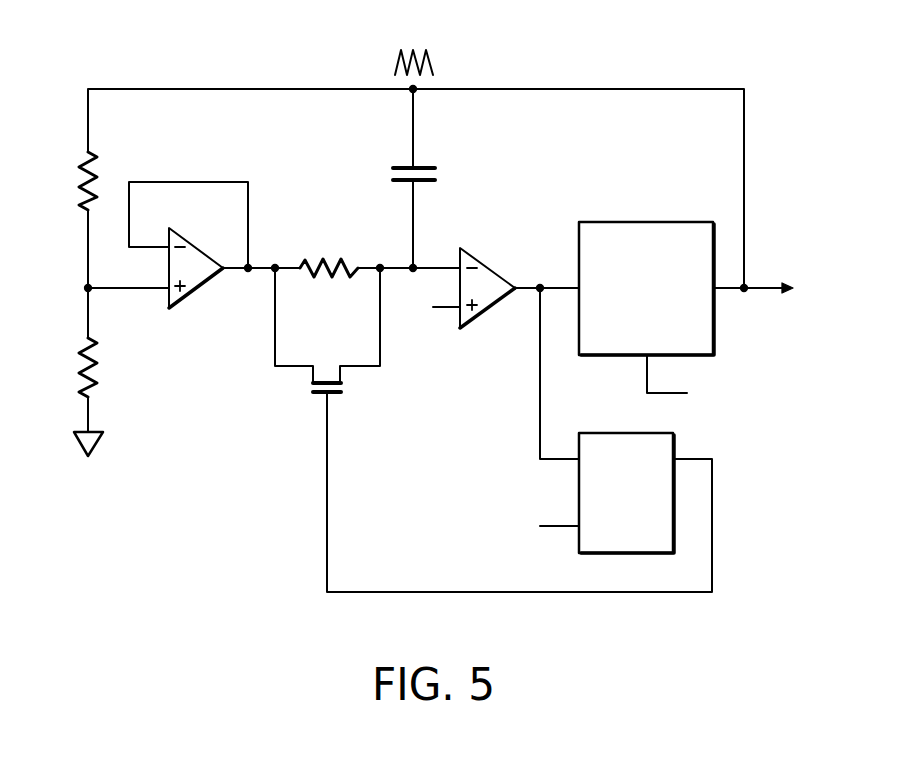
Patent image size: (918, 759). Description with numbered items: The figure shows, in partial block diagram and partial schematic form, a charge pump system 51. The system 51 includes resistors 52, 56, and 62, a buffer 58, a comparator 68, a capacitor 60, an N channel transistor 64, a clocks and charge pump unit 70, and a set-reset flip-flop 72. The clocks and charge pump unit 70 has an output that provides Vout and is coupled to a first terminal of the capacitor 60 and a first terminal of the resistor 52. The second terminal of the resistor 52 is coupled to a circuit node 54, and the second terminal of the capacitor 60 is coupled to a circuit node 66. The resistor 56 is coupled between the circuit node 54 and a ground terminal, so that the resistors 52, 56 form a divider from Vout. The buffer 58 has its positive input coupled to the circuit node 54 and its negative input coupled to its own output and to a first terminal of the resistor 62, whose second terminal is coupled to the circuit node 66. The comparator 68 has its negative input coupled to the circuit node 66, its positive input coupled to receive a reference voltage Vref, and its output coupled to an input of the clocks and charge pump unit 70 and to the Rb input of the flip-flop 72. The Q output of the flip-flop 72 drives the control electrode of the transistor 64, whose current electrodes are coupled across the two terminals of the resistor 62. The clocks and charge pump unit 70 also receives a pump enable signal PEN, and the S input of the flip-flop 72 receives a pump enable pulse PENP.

The charge pump system 51 is at (84, 46).
The resistor 52 is at (80, 166).
The circuit node 54 is at (84, 287).
The resistor 56 is at (80, 351).
The buffer 58 is at (192, 241).
The capacitor 60 is at (426, 160).
The resistor 62 is at (320, 262).
The N channel transistor 64 is at (325, 380).
The circuit node 66 is at (380, 263).
The comparator 68 is at (485, 259).
The clocks and charge pump unit 70 is at (660, 221).
The set-reset (SR) flip-flop 72 is at (596, 431).